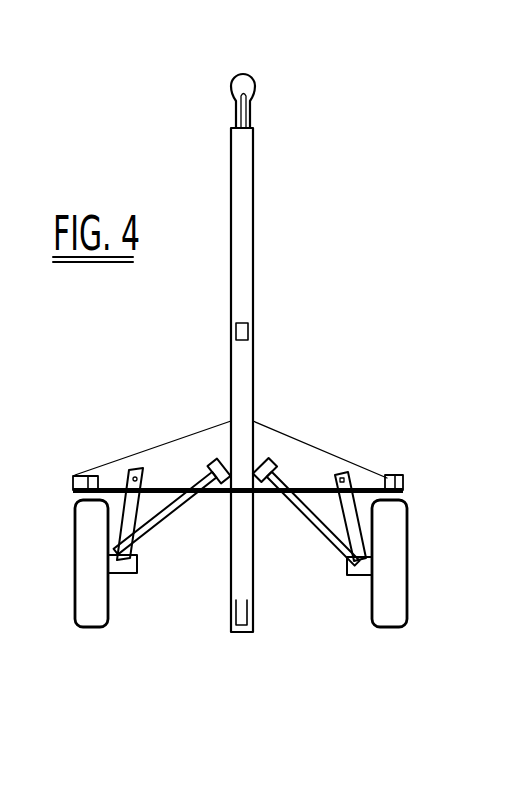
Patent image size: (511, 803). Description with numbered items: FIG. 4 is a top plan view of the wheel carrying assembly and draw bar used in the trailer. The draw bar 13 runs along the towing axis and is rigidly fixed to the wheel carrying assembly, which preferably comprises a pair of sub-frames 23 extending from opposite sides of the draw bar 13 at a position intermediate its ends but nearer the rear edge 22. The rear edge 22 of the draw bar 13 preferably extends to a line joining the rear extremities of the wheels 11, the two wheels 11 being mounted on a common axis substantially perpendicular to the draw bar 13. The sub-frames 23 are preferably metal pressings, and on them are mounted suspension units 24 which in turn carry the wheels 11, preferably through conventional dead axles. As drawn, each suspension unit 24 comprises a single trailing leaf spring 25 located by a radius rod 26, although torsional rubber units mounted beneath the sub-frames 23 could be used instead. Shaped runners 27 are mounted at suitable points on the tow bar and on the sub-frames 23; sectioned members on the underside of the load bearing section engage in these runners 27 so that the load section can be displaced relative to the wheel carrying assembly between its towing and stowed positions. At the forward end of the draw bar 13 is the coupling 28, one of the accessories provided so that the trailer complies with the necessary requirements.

The wheels 11 is at (97, 593).
The draw bar 13 is at (249, 178).
The rear edge of the draw bar 22 is at (248, 633).
The sub-frames 23 is at (165, 447).
The suspension units 24 is at (160, 530).
The trailing leaf spring 25 is at (362, 499).
The radius rod 26 is at (305, 510).
The runners 27 is at (253, 330).
The coupling 28 is at (256, 85).